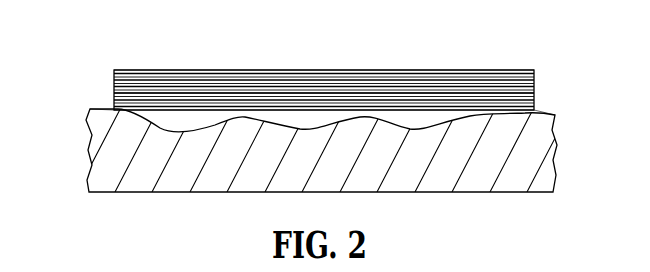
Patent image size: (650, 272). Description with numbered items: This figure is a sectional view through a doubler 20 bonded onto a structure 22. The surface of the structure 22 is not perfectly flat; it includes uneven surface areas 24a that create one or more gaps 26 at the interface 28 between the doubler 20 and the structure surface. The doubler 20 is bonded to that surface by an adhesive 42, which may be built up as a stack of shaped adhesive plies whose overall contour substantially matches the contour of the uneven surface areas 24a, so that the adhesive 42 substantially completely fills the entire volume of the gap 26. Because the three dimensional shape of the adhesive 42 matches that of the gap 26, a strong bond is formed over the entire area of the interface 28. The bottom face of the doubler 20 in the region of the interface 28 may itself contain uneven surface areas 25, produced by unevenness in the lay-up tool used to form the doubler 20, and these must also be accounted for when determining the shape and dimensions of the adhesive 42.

The doubler 20 is at (515, 90).
The structure 22 is at (527, 162).
The uneven surface areas 24a is at (417, 129).
The uneven surface areas 25 is at (452, 105).
The gap 26 is at (295, 119).
The interface 28 is at (127, 111).
The adhesive 42 is at (172, 115).